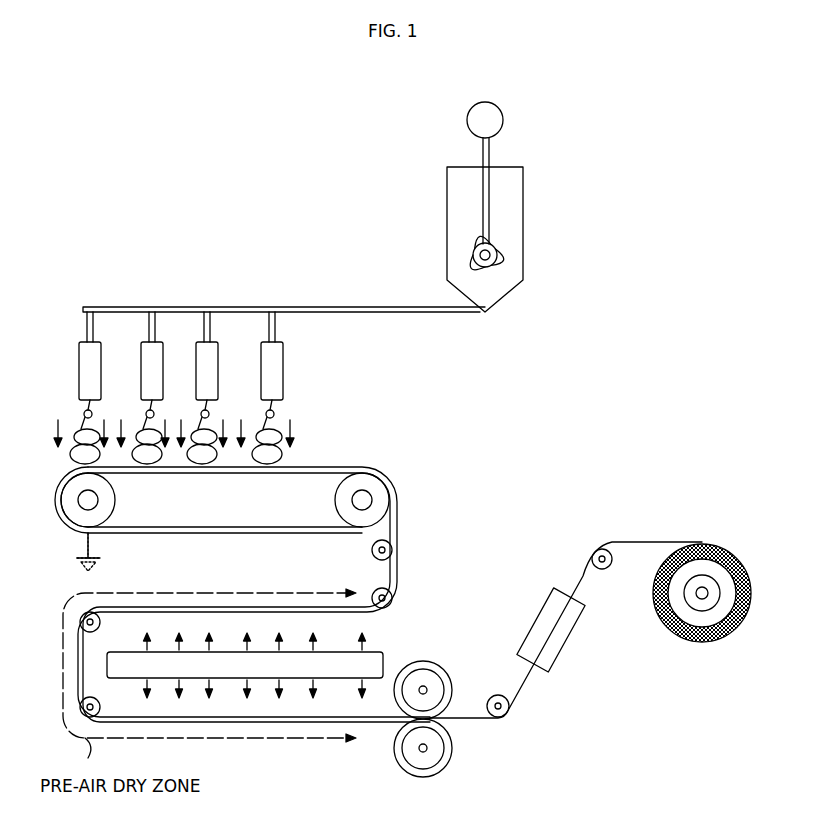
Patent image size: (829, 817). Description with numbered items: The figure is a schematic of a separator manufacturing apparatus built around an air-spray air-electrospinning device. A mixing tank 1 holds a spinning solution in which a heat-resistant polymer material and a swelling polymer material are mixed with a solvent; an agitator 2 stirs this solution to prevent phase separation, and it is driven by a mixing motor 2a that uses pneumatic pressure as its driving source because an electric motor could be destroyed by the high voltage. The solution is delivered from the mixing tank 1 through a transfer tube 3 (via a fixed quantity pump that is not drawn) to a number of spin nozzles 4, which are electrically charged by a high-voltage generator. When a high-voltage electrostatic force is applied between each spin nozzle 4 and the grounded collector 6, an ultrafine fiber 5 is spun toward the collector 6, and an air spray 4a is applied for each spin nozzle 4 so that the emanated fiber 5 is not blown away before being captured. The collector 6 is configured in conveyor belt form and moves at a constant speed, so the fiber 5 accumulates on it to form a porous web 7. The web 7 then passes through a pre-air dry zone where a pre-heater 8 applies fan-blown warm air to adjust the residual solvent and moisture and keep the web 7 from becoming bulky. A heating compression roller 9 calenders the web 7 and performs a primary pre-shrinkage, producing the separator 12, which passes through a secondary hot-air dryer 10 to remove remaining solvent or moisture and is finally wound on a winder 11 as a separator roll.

The mixing tank 1 is at (523, 215).
The agitator 2 is at (500, 247).
The mixing motor 2a is at (503, 120).
The transfer tube 3 is at (350, 305).
The spin nozzle 4 is at (283, 355).
The air spray 4a is at (228, 425).
The ultrafine fiber 5 is at (265, 414).
The collector 6 is at (372, 496).
The porous web 7 is at (368, 464).
The pre-heater 8 is at (300, 652).
The heating compression roller 9 is at (448, 642).
The secondary hot-air dryer 10 is at (562, 650).
The winder 11 is at (707, 566).
The separator 12 is at (580, 572).